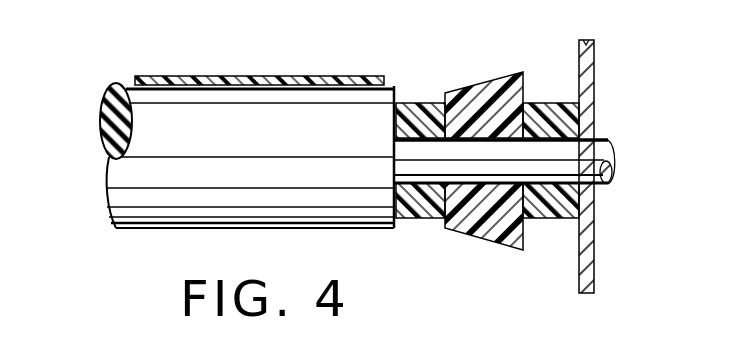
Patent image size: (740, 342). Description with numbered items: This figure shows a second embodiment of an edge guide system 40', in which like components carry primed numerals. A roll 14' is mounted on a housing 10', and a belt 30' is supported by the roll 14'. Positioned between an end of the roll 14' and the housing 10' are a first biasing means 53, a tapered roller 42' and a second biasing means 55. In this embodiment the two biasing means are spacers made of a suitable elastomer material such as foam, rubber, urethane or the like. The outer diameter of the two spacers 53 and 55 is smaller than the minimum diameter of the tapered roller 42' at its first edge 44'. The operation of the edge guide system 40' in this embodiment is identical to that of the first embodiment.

The roll 14' is at (217, 185).
The belt 30' is at (259, 42).
The edge guide system 40' is at (537, 94).
The first biasing means 53 is at (419, 108).
The first edge 44' is at (421, 238).
The tapered roller 42' is at (484, 183).
The second biasing means 55 is at (547, 212).
The housing 10' is at (629, 166).